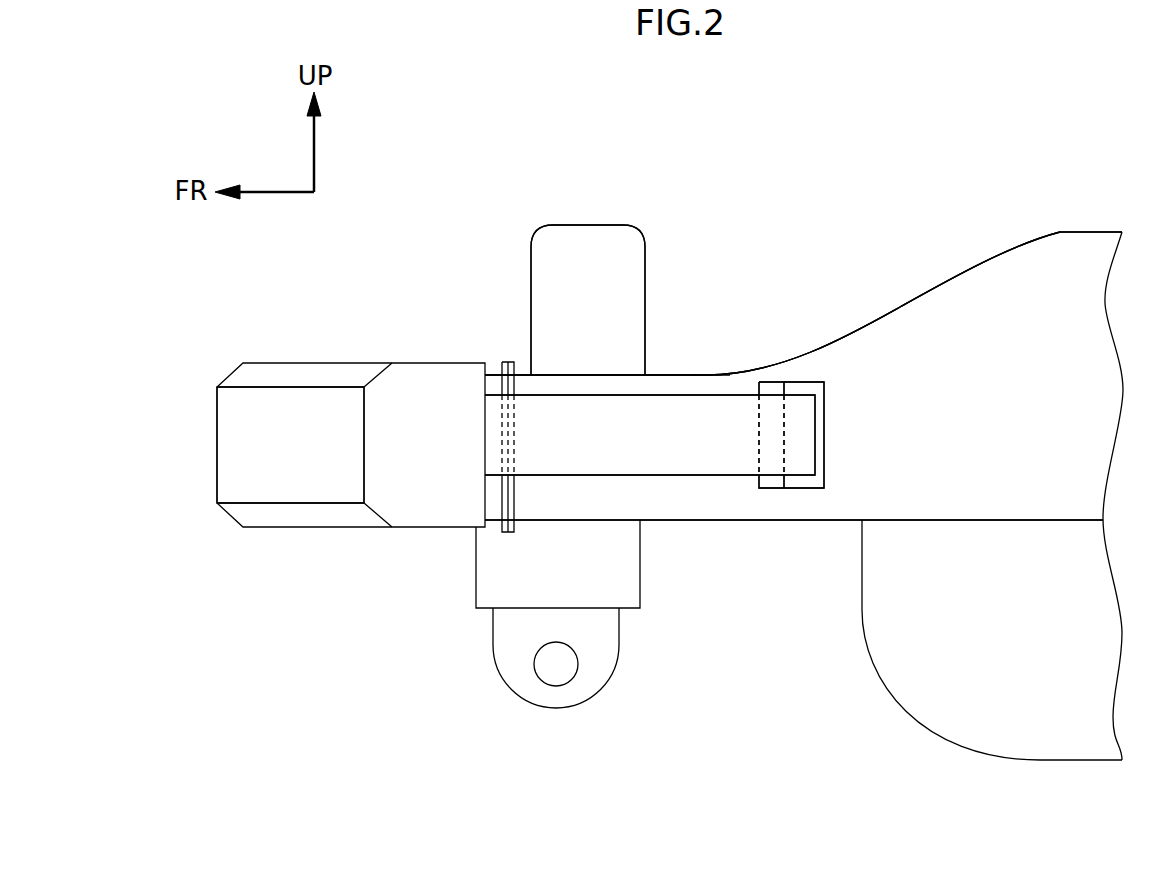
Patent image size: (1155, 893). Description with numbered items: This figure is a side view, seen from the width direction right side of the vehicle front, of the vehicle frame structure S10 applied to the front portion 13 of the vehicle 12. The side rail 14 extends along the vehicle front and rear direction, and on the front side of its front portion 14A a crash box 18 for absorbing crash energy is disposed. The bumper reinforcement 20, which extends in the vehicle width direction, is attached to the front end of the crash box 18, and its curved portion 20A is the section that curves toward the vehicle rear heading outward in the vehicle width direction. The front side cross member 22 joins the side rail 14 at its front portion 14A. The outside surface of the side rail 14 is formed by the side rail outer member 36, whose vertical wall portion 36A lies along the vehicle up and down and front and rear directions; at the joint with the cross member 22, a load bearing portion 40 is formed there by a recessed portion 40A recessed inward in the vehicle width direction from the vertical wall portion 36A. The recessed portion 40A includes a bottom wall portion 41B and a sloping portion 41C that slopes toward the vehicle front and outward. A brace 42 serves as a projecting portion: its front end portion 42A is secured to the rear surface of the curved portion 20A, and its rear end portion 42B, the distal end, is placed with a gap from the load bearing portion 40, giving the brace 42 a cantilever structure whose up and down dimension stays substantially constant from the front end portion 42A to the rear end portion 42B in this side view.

The vehicle 12 is at (794, 321).
The front portion of the vehicle 13 is at (718, 213).
The side rail 14 is at (957, 276).
The front portion of the side rail 14A is at (670, 375).
The crash box 18 is at (492, 387).
The bumper reinforcement 20 is at (298, 361).
The curved portion 20A is at (310, 480).
The cross member 22 is at (928, 695).
The side rail outer member 36 is at (987, 297).
The vertical wall portion 36A is at (872, 383).
The load bearing portion 40 is at (829, 380).
The recessed portion 40A is at (804, 390).
The bottom wall portion 41B is at (820, 430).
The sloping portion 41C is at (773, 390).
The brace 42 is at (660, 478).
The front end portion of the brace 42A is at (543, 452).
The rear end portion of the brace 42B is at (740, 448).
The vehicle frame structure S10 is at (706, 348).